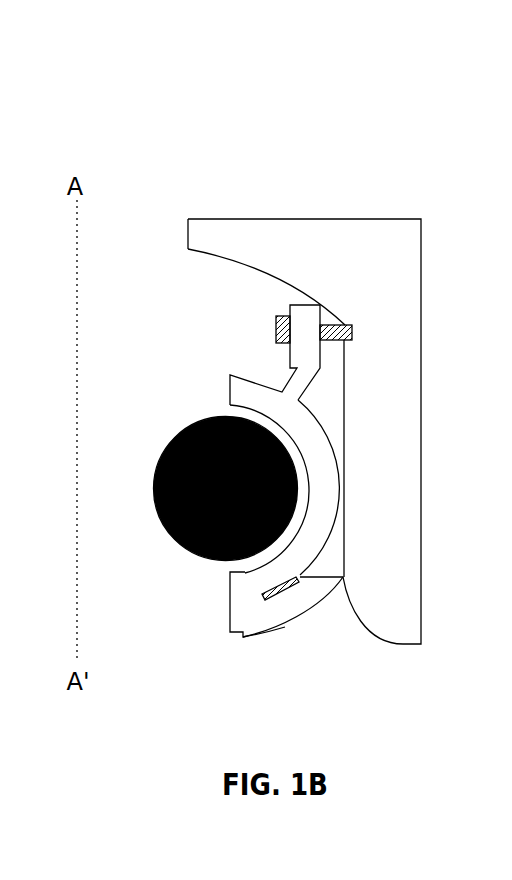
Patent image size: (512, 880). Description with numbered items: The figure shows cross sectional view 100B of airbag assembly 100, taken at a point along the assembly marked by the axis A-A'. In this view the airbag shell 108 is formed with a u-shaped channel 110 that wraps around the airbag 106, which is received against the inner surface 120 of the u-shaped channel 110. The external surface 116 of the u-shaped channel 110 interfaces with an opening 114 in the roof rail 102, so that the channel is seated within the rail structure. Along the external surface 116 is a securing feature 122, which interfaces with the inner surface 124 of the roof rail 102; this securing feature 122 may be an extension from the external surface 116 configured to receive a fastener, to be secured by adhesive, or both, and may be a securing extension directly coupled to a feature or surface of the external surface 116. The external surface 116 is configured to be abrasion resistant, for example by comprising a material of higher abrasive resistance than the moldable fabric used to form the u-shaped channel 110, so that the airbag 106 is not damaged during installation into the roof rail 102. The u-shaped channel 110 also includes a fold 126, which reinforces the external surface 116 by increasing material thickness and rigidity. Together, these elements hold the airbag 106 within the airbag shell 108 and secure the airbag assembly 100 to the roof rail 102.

The cross sectional view 100B is at (128, 80).
The airbag assembly 100 is at (266, 139).
The roof rail 102 is at (402, 226).
The airbag 106 is at (202, 502).
The airbag shell 108 is at (258, 587).
The u-shaped channel 110 is at (157, 417).
The opening 114 is at (382, 215).
The external surface 116 is at (320, 547).
The inner surface 120 is at (230, 572).
The securing feature 122 is at (263, 288).
The inner surface of roof rail 124 is at (345, 347).
The fold 126 is at (268, 620).